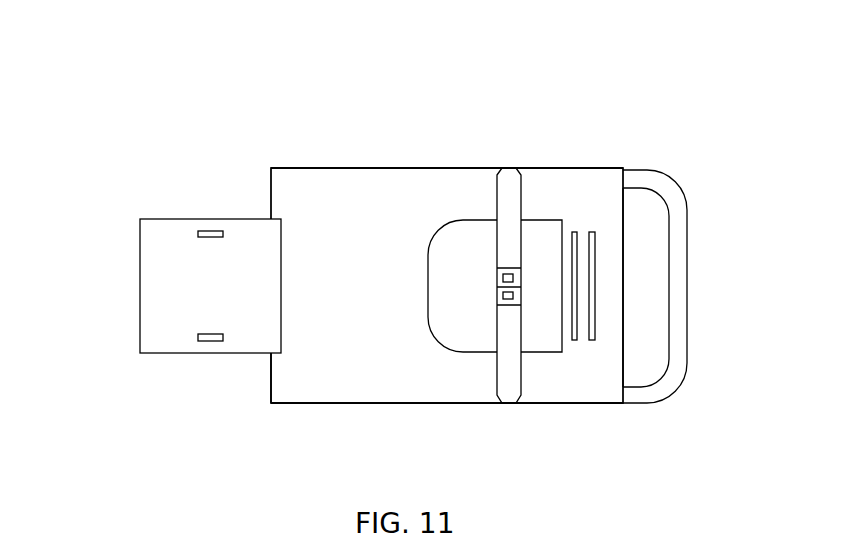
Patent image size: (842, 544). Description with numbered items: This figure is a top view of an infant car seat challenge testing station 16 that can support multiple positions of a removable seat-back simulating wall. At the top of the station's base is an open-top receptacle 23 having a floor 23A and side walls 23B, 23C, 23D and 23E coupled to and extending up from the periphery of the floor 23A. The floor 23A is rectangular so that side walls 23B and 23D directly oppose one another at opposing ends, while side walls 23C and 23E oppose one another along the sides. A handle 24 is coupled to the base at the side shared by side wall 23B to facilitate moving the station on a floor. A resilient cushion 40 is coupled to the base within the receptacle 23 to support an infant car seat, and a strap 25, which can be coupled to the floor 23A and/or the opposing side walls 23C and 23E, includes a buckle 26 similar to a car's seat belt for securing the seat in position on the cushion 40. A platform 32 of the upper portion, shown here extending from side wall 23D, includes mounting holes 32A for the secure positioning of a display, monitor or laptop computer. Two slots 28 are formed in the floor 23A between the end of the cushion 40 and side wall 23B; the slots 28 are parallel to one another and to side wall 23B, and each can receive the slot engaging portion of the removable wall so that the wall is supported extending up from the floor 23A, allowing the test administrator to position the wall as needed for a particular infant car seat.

The infant car seat challenge testing station 16 is at (513, 81).
The open-top receptacle 23 is at (351, 146).
The floor 23A is at (334, 263).
The side wall 23B is at (625, 265).
The side wall 23C is at (387, 168).
The side wall 23D is at (270, 379).
The side wall 23E is at (322, 403).
The handle 24 is at (662, 183).
The strap 25 is at (512, 380).
The buckle 26 is at (497, 285).
The slots 28 is at (574, 232).
The platform 32 is at (162, 219).
The holes 32A is at (203, 231).
The resilient cushion 40 is at (537, 191).